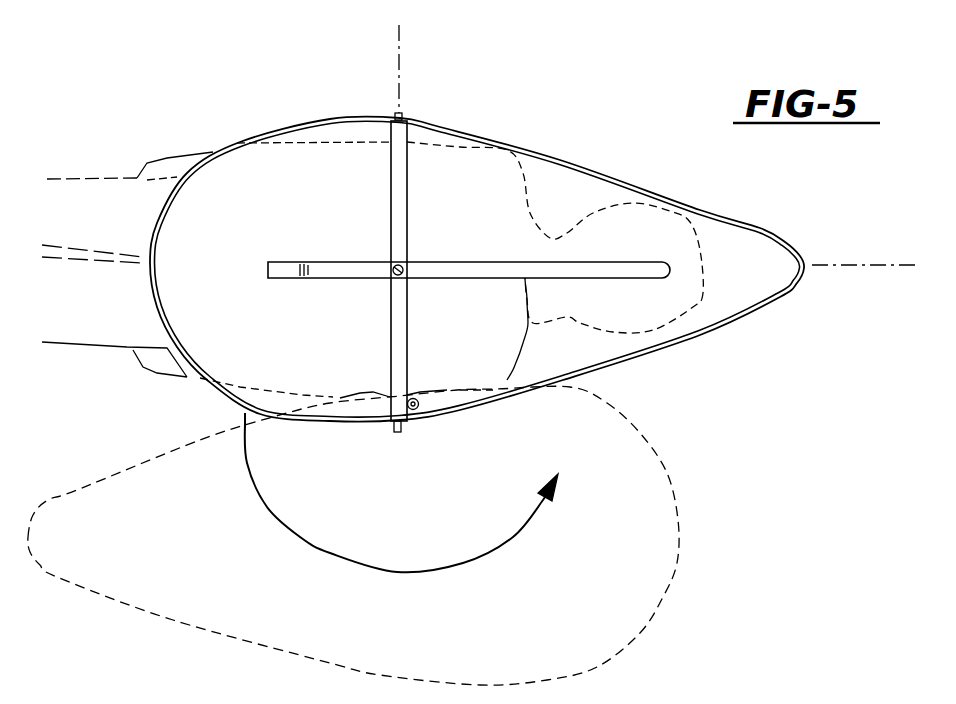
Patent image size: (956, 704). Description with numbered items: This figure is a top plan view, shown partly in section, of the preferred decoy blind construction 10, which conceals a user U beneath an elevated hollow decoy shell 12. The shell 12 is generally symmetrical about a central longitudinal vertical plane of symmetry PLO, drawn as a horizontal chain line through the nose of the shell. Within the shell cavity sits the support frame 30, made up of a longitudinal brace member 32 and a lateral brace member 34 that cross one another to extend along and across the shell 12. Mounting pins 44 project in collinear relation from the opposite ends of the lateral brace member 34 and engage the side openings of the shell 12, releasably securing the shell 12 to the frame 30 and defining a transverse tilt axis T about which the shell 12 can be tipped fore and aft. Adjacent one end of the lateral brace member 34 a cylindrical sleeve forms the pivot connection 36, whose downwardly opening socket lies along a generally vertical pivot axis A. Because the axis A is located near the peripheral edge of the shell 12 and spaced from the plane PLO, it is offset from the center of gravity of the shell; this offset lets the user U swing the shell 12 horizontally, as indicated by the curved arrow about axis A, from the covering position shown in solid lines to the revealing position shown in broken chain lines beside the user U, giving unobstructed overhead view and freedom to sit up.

The blind construction 10 is at (580, 130).
The decoy shell 12 is at (630, 178).
The support frame 30 is at (467, 261).
The longitudinal brace member 32 is at (526, 325).
The lateral brace member 34 is at (404, 333).
The pivot connection portion 36 is at (415, 400).
The mounting pins 44 is at (396, 117).
The tilt axis T is at (400, 94).
The user U is at (703, 203).
The pivot axis A is at (415, 408).
The central longitudinal vertical plane of symmetry PLO is at (885, 262).